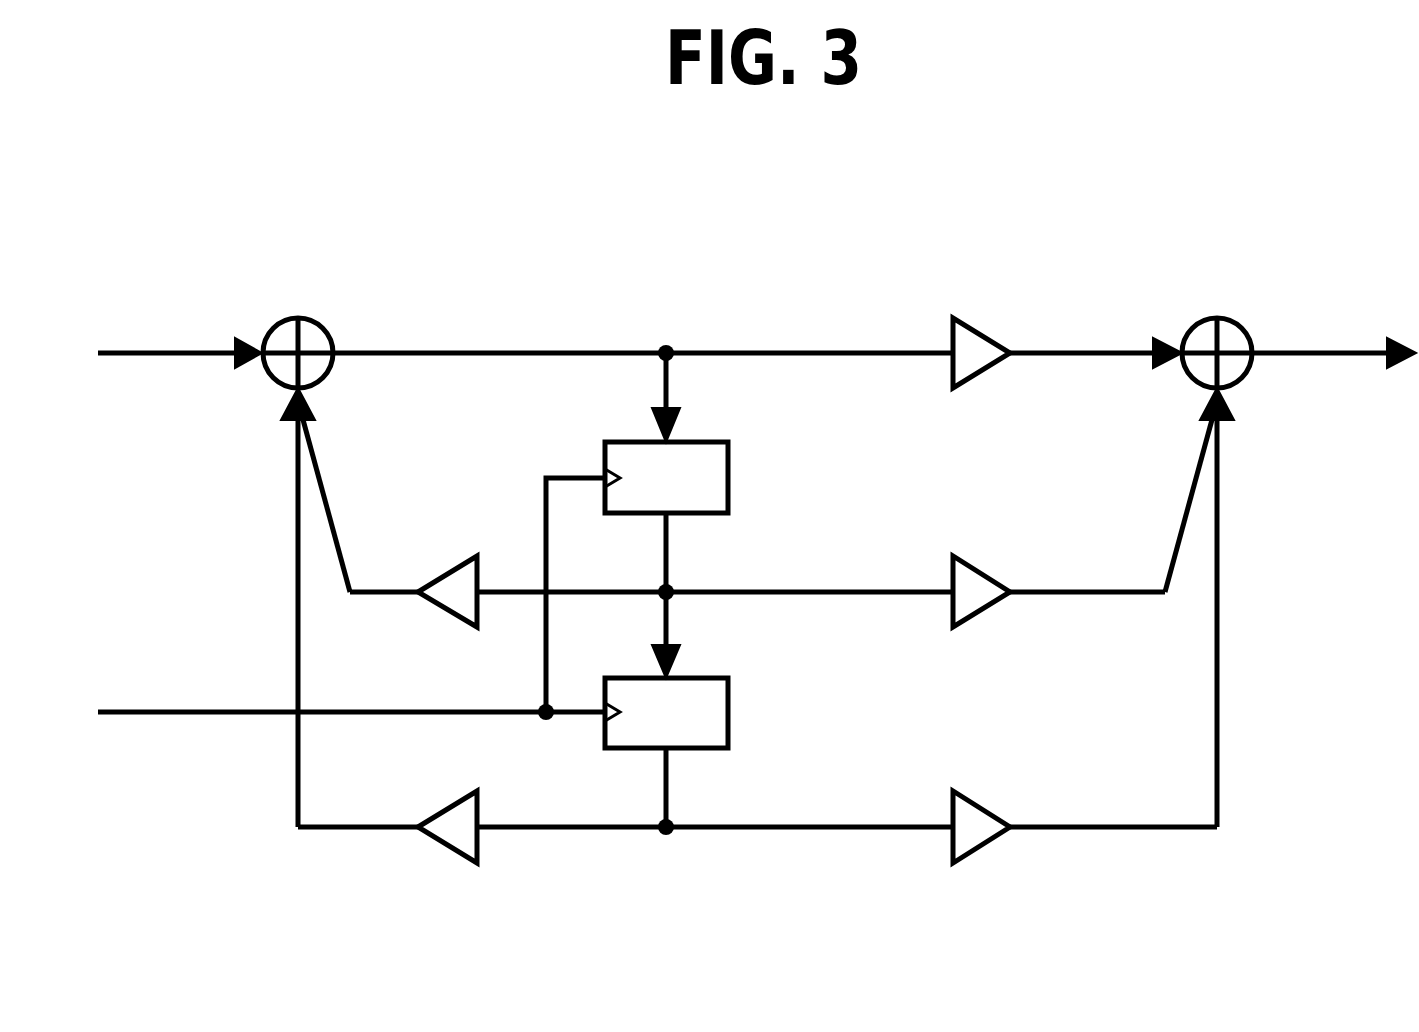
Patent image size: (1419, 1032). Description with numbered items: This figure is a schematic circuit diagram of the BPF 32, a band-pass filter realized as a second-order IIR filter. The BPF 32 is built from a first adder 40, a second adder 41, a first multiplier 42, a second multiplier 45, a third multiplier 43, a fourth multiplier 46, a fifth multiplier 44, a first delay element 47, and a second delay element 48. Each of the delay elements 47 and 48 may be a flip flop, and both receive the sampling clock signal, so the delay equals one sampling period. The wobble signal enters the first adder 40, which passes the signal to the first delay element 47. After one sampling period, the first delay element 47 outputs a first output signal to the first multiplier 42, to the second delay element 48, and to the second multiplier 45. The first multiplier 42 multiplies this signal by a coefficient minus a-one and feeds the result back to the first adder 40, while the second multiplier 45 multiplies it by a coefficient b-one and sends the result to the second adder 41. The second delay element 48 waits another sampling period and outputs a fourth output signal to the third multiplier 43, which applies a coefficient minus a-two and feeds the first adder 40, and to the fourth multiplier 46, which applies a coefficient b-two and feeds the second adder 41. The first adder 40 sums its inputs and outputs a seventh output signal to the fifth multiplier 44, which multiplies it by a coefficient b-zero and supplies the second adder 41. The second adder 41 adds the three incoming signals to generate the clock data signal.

The BPF 32 is at (1078, 214).
The first adder 40 is at (318, 323).
The second adder 41 is at (1198, 322).
The first multiplier 42 is at (452, 610).
The third multiplier 43 is at (452, 845).
The fifth multiplier 44 is at (980, 375).
The second multiplier 45 is at (980, 613).
The fourth multiplier 46 is at (980, 848).
The first delay element 47 is at (638, 515).
The second delay element 48 is at (638, 750).